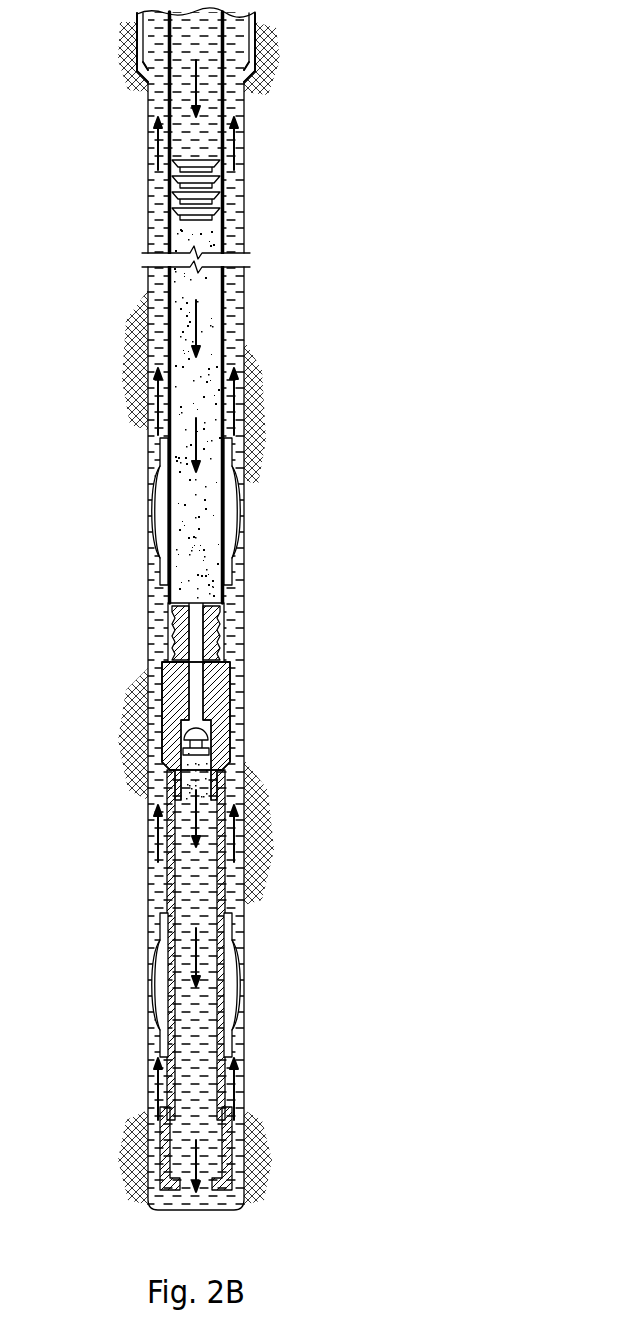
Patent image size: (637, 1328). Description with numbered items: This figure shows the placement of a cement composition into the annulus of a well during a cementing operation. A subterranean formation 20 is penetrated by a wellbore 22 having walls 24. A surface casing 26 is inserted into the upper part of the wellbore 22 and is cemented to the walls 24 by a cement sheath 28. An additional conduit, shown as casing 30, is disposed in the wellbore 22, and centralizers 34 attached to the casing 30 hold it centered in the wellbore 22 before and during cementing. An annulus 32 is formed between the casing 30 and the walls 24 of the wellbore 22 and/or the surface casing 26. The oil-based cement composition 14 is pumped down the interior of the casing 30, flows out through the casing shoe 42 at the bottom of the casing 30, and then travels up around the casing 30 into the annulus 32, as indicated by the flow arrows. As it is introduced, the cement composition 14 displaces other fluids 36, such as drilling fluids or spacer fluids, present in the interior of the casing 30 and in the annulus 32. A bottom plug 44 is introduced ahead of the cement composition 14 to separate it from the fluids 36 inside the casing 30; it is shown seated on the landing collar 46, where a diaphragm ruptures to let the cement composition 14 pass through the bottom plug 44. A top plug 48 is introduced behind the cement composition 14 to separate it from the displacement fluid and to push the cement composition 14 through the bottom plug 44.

The oil-based cement composition 14 is at (195, 312).
The subterranean formation 20 is at (371, 624).
The wellbore 22 is at (253, 455).
The walls 24 is at (235, 185).
The surface casing 26 is at (240, 33).
The cement sheath 28 is at (243, 75).
The casing 30 is at (226, 350).
The annulus 32 is at (156, 432).
The centralizers 34 is at (158, 955).
The fluids 36 is at (195, 808).
The casing shoe 42 is at (162, 1160).
The bottom plug 44 is at (168, 620).
The landing collar 46 is at (163, 712).
The top plug 48 is at (171, 215).